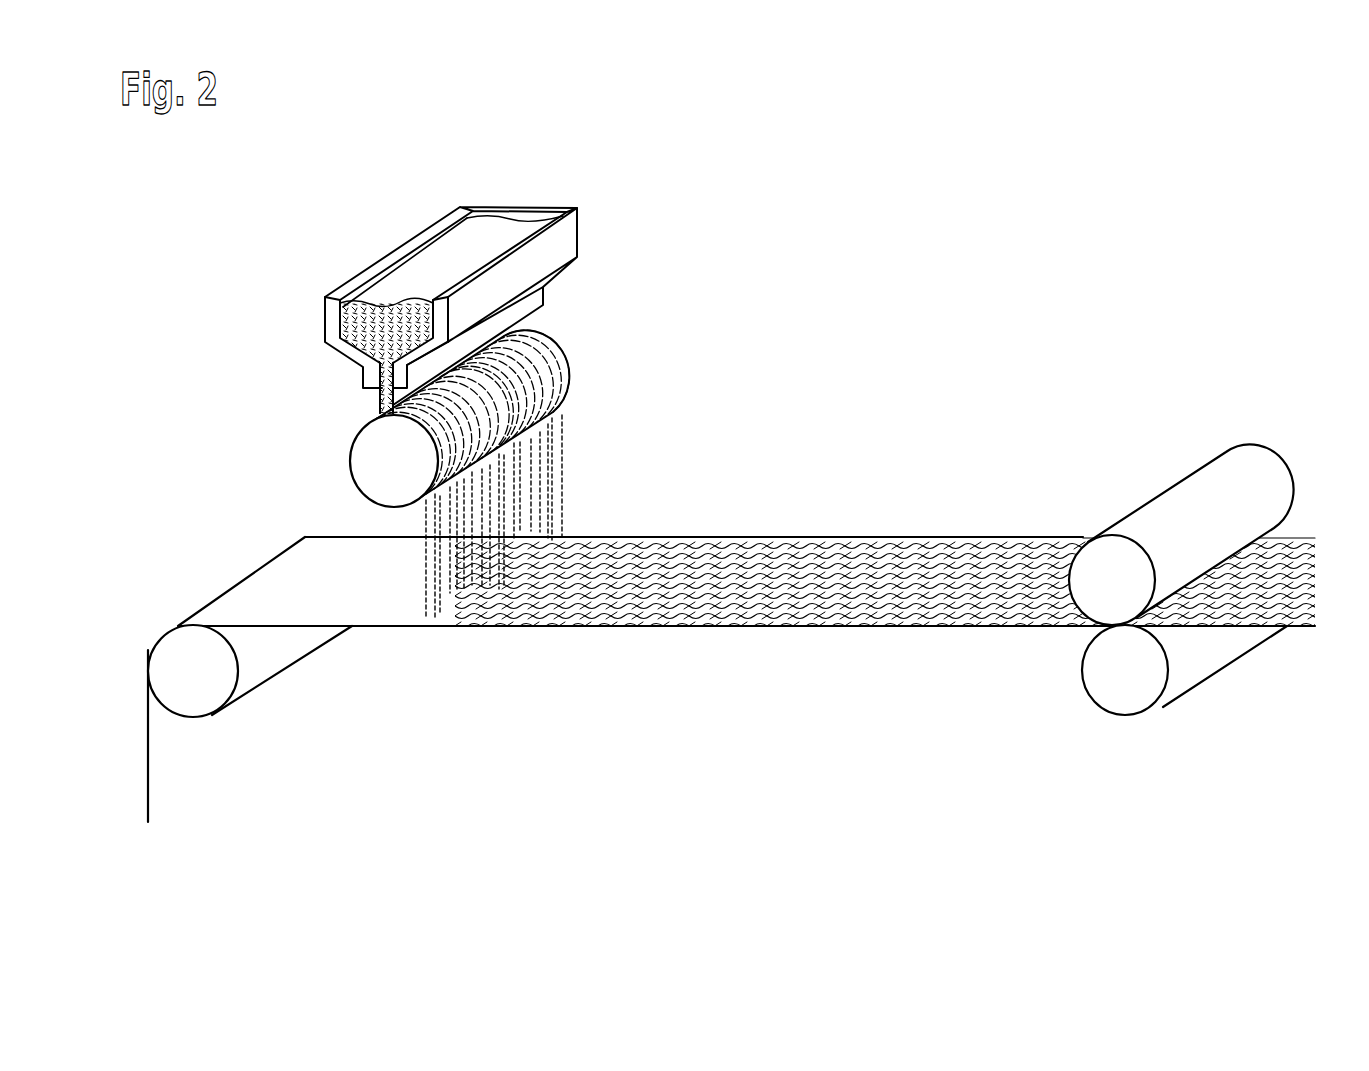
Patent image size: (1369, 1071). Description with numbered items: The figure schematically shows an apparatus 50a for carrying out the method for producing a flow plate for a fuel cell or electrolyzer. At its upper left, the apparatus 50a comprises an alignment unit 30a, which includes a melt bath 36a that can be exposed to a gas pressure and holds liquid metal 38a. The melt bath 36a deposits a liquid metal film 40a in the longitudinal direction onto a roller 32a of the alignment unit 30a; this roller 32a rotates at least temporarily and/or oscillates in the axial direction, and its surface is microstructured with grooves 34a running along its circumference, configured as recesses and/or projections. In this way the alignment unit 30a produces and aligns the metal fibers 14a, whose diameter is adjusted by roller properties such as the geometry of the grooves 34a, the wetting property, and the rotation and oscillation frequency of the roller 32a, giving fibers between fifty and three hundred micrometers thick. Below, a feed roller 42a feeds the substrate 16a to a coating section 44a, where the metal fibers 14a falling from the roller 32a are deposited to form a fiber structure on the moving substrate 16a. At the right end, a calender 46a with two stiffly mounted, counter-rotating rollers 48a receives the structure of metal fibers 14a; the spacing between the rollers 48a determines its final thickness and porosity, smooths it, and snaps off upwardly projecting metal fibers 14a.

The apparatus 50a is at (810, 228).
The alignment unit 30a is at (618, 292).
The melt bath 36a is at (340, 277).
The liquid metal 38a is at (508, 227).
The liquid metal film 40a is at (380, 405).
The roller 32a is at (374, 468).
The grooves 34a is at (568, 366).
The coating section 44a is at (594, 525).
The substrate 16a is at (393, 612).
The feed roller 42a is at (205, 703).
The metal fibers 14a is at (755, 612).
The calender 46a is at (1235, 705).
The roller 48a is at (1153, 518).